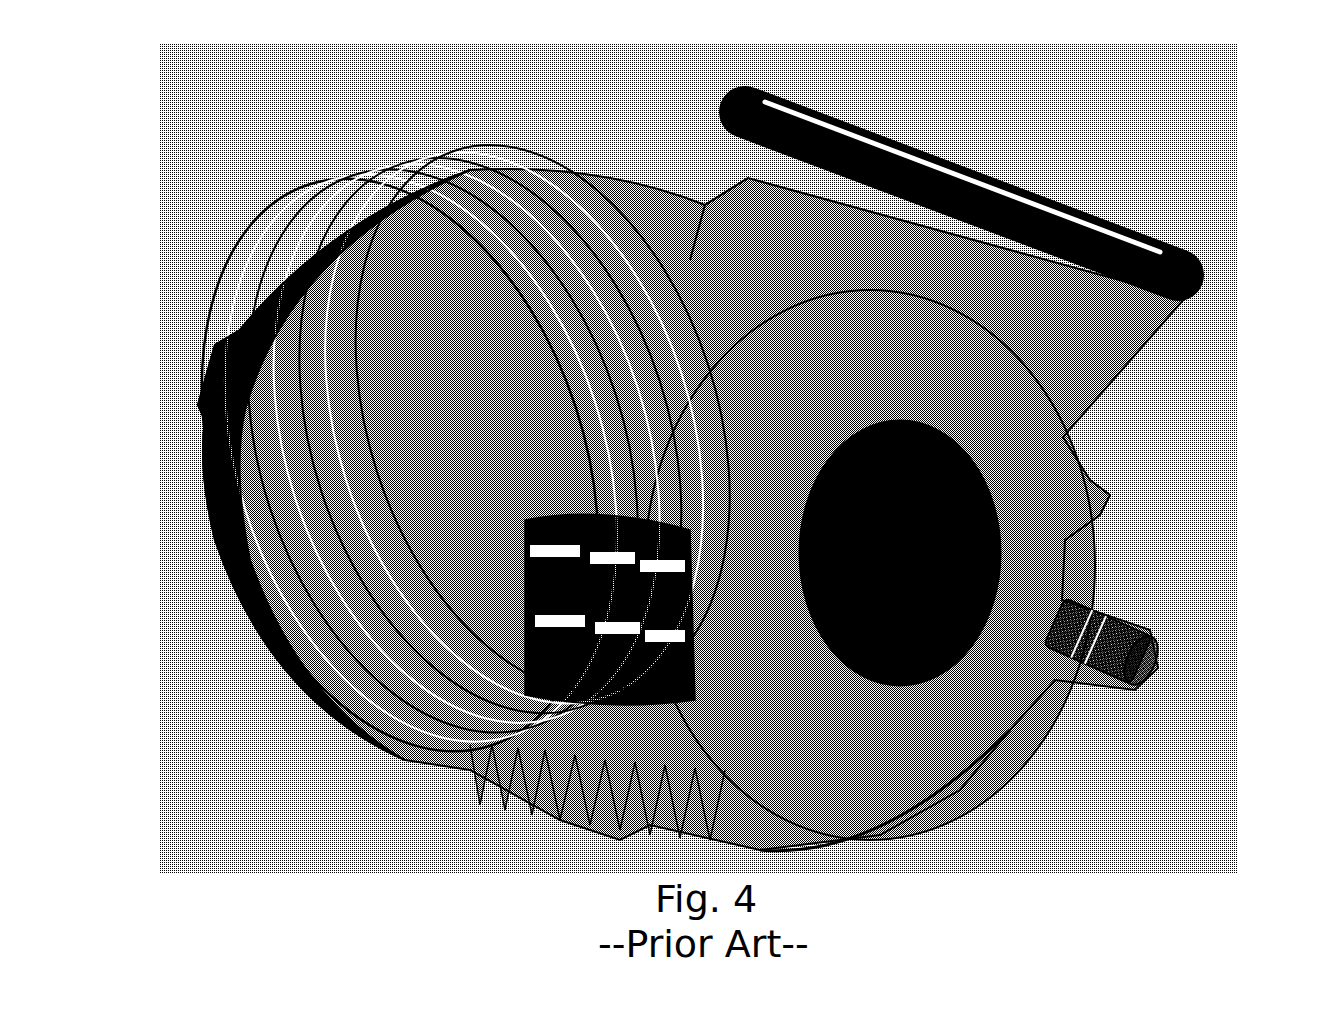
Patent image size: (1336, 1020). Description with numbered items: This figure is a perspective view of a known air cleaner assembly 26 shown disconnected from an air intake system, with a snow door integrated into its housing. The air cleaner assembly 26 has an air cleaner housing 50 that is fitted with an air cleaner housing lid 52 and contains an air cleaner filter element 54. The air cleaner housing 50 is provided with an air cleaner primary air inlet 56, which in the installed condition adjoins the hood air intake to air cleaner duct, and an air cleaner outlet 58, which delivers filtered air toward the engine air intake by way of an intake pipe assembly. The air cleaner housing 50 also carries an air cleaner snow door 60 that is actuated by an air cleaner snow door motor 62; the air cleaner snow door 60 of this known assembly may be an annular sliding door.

The air cleaner assembly 26 is at (383, 797).
The air cleaner housing 50 is at (406, 563).
The air cleaner housing lid 52 is at (283, 268).
The air cleaner filter element 54 is at (895, 568).
The air cleaner primary air inlet 56 is at (977, 177).
The air cleaner outlet 58 is at (870, 663).
The air cleaner snow door 60 is at (612, 645).
The air cleaner snow door motor 62 is at (1100, 610).